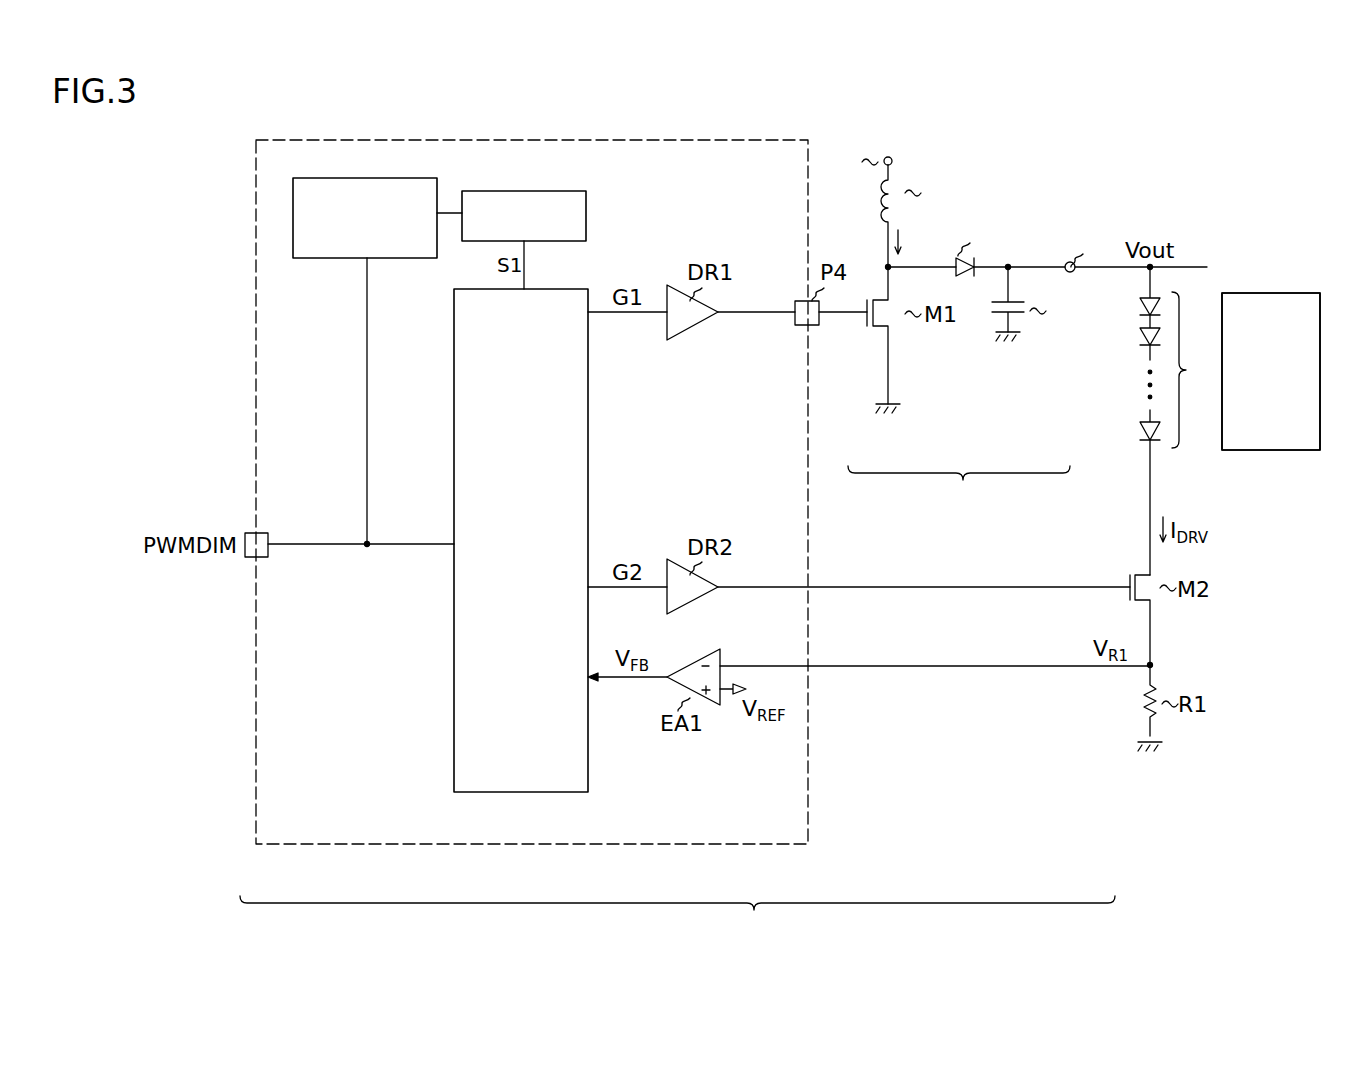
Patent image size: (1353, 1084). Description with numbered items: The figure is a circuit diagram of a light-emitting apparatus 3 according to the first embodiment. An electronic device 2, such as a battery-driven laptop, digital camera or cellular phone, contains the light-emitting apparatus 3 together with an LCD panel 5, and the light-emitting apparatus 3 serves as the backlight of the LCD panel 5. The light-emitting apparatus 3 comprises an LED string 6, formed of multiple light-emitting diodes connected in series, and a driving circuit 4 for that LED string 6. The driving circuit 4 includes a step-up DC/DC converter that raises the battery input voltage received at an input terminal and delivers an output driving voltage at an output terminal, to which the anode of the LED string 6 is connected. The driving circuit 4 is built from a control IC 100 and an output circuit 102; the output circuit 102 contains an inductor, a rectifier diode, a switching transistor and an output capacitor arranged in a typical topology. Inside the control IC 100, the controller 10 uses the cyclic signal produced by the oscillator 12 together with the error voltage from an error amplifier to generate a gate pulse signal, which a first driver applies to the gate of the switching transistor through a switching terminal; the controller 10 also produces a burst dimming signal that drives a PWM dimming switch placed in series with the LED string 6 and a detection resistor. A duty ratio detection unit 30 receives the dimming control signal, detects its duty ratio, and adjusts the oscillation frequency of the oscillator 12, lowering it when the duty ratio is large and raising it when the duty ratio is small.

The electronic device 2 is at (1307, 157).
The light-emitting apparatus 3 is at (1173, 220).
The driving circuit 4 is at (677, 919).
The LCD panel 5 is at (1274, 293).
The LED string 6 is at (1172, 421).
The controller 10 is at (521, 794).
The oscillator 12 is at (590, 214).
The duty ratio detection unit 30 is at (311, 262).
The control IC 100 is at (603, 847).
The output circuit 102 is at (1019, 331).